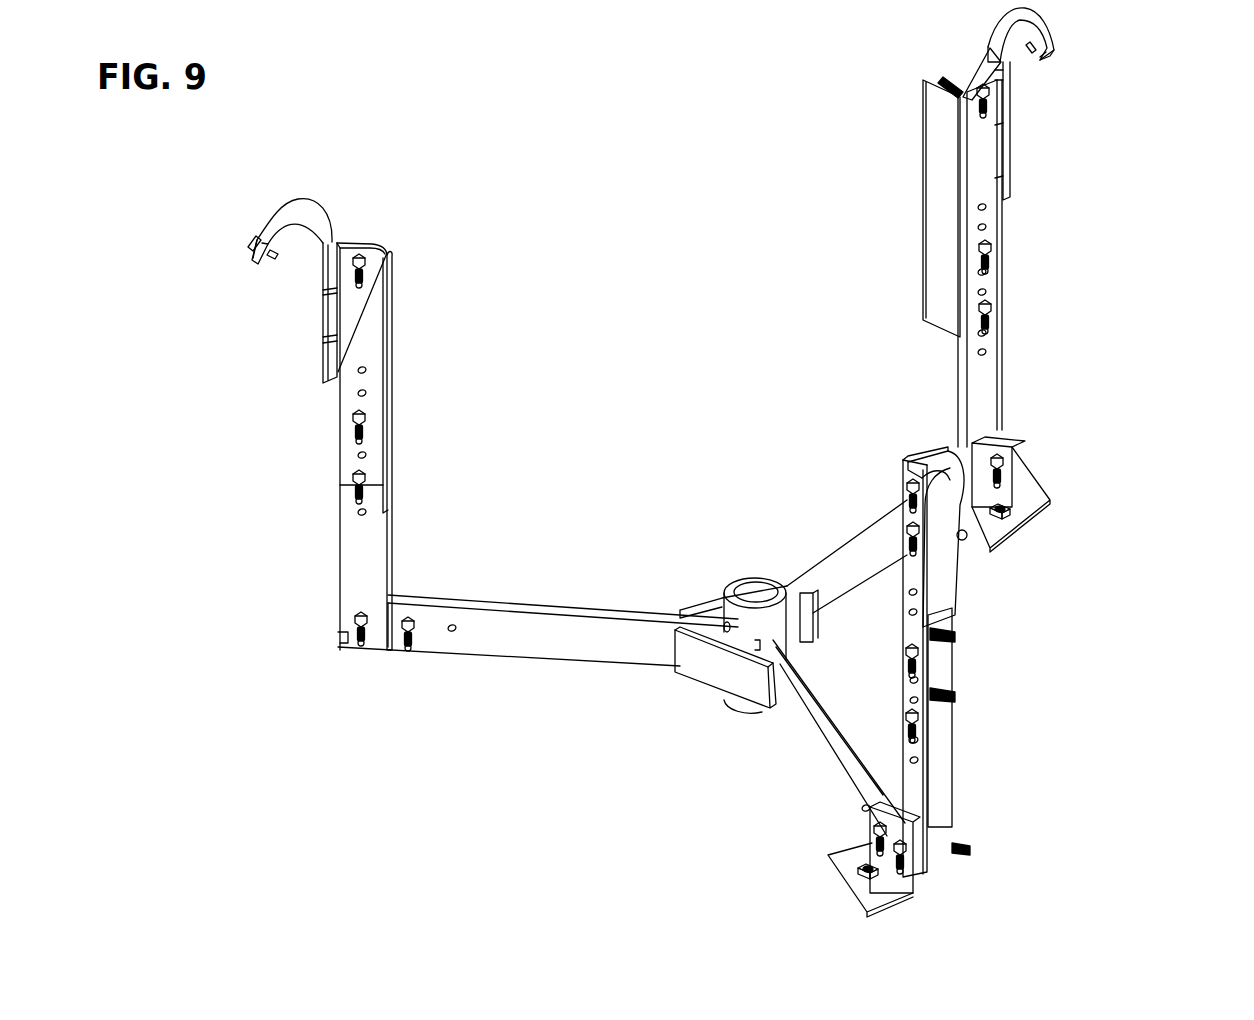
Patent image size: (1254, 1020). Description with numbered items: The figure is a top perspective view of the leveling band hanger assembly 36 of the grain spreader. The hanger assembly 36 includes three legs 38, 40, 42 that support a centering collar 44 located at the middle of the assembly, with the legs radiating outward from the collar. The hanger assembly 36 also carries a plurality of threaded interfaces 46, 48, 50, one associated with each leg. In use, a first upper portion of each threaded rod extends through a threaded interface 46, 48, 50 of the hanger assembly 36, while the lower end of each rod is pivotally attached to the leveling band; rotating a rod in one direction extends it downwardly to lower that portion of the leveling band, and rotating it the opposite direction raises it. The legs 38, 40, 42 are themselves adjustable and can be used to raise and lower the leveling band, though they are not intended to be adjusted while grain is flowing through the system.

The hanger assembly 36 is at (1135, 133).
The leg 38 is at (998, 366).
The leg 40 is at (393, 326).
The leg 42 is at (955, 756).
The centering collar 44 is at (749, 578).
The threaded interface 46 is at (1022, 497).
The threaded interface 48 is at (850, 872).
The threaded interface 50 is at (346, 659).